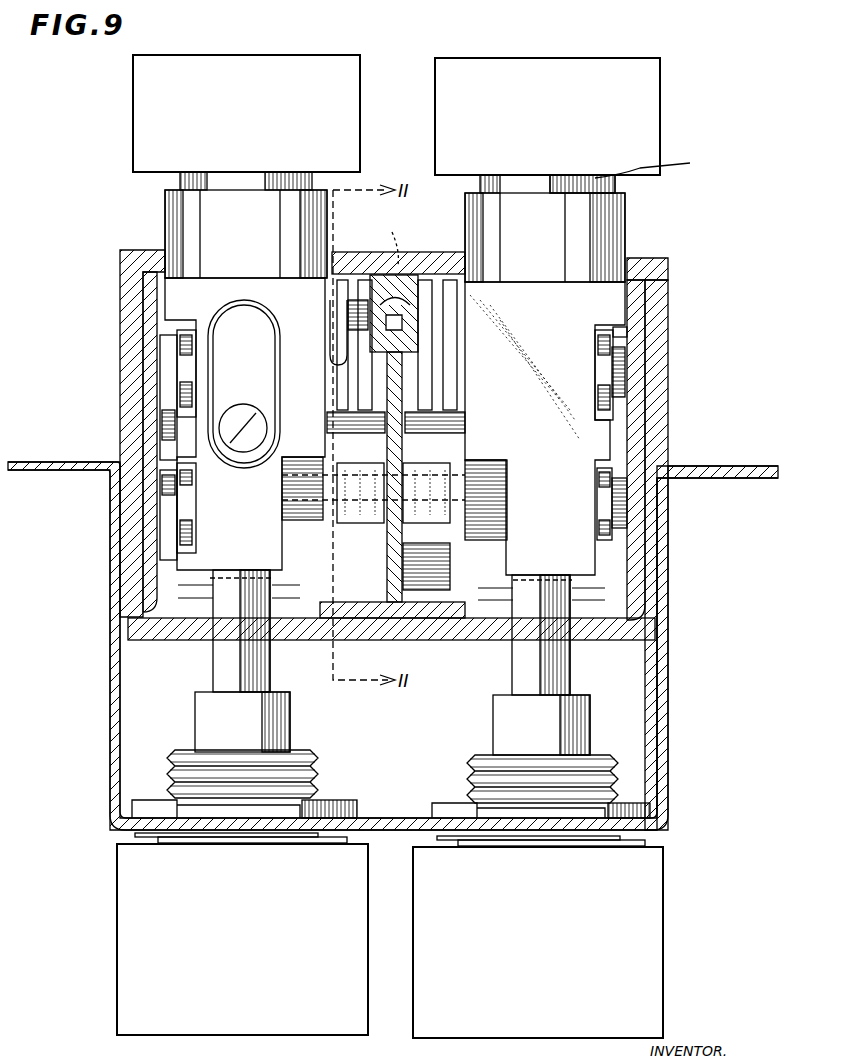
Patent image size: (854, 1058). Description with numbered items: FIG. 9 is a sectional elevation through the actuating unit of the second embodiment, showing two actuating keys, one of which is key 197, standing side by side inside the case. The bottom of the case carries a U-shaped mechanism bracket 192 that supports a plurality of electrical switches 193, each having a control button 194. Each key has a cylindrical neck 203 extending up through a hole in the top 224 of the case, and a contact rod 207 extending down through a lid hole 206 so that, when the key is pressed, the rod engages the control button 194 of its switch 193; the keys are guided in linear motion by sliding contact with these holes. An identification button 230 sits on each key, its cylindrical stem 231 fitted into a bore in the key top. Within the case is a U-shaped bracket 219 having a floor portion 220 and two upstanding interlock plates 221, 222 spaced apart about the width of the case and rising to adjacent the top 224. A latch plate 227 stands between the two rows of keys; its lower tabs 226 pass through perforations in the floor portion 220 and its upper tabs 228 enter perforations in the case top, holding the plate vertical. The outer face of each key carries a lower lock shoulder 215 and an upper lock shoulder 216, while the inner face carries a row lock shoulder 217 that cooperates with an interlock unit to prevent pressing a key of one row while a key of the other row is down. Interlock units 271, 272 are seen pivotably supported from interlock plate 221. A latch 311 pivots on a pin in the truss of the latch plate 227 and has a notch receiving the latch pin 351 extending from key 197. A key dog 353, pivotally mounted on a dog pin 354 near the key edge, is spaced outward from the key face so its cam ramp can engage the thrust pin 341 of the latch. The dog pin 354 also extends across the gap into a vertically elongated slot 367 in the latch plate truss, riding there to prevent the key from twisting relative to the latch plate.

The U-shaped mechanism bracket 192 is at (110, 722).
The electrical switch 193 is at (117, 978).
The control button 194 is at (285, 730).
The actuating key 197 is at (191, 298).
The cylindrical neck 203 is at (165, 225).
The lid hole 206 is at (272, 640).
The contact rod 207 is at (213, 660).
The lower lock shoulder 215 is at (160, 465).
The upper lock shoulder 216 is at (160, 330).
The row lock shoulder 217 is at (285, 478).
The U-shaped bracket 219 is at (636, 377).
The floor portion 220 is at (437, 612).
The interlock plate 221 is at (640, 395).
The interlock plate 222 is at (152, 365).
The top 224 is at (640, 268).
The tab 226 is at (395, 640).
The latch plate 227 is at (387, 580).
The upper tab 228 is at (398, 249).
The identification button 230 is at (148, 110).
The cylindrical stem 231 is at (640, 173).
The interlock unit 271 is at (618, 520).
The interlock unit 272 is at (618, 360).
The latch 311 is at (340, 425).
The thrust pin 341 is at (362, 400).
The latch pin 351 is at (342, 435).
The key dog 353 is at (342, 385).
The dog pin 354 is at (350, 315).
The vertically elongated slot 367 is at (400, 330).